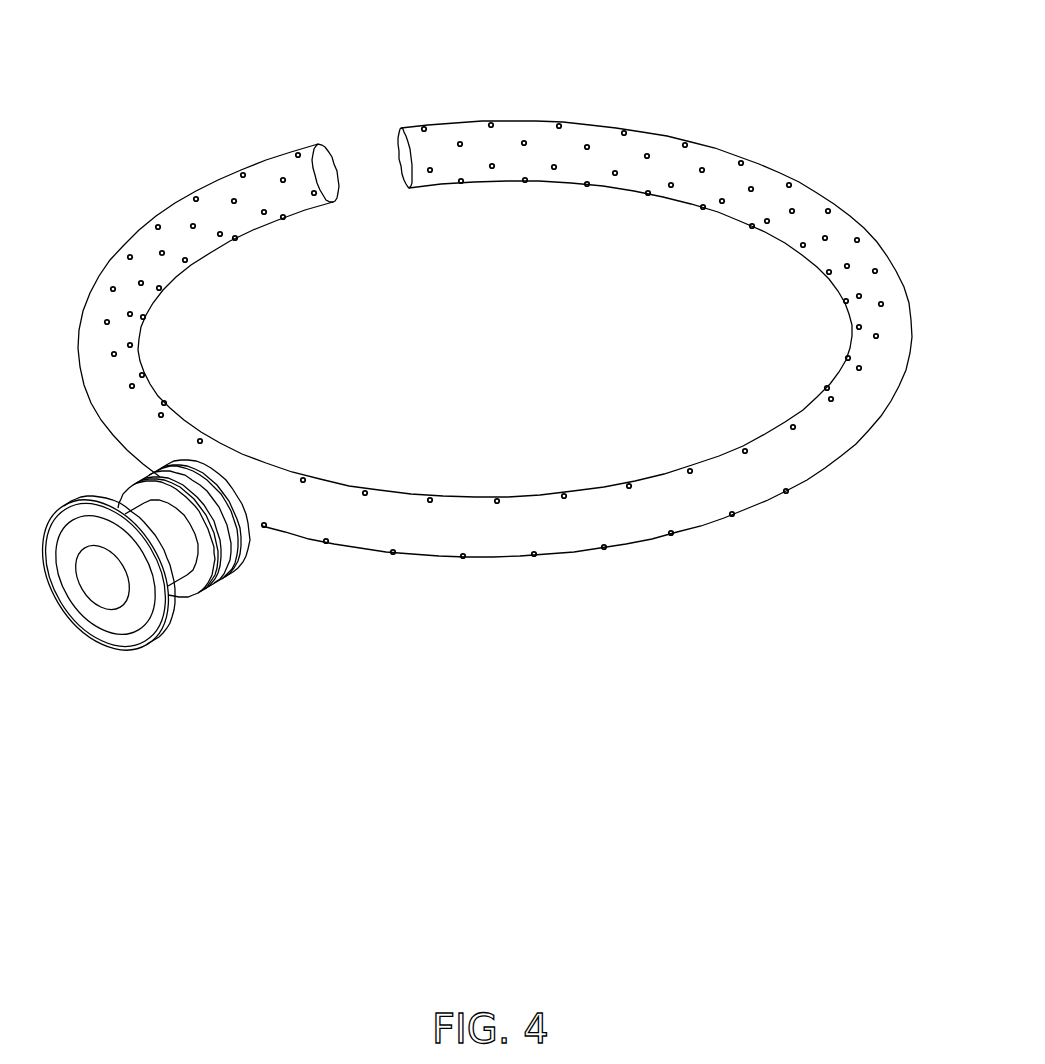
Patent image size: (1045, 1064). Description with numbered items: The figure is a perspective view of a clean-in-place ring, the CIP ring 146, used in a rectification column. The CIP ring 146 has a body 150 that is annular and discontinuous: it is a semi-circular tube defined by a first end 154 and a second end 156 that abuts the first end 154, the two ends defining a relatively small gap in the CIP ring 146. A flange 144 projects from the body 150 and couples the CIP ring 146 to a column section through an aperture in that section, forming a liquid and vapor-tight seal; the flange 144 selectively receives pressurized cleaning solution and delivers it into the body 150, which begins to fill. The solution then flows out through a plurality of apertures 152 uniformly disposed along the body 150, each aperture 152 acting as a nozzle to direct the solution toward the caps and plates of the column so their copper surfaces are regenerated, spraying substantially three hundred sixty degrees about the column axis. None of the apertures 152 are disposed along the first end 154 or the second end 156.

The flange 144 is at (177, 567).
The CIP ring 146 is at (733, 73).
The body 150 is at (808, 198).
The apertures 152 is at (188, 257).
The first end 154 is at (404, 152).
The second end 156 is at (327, 149).